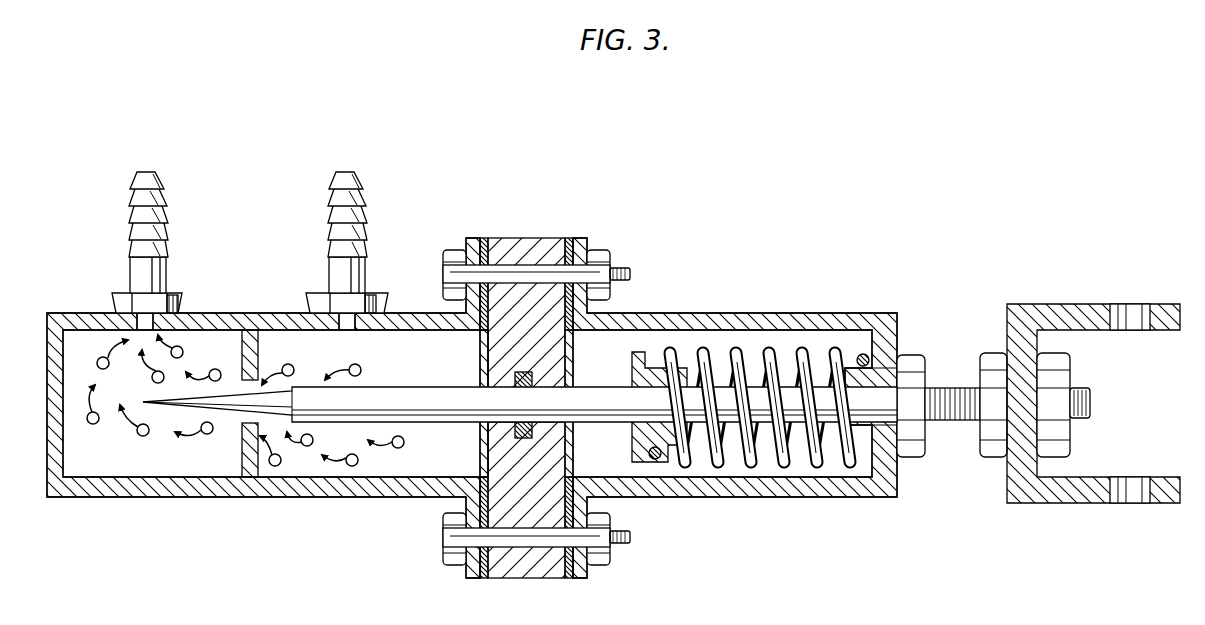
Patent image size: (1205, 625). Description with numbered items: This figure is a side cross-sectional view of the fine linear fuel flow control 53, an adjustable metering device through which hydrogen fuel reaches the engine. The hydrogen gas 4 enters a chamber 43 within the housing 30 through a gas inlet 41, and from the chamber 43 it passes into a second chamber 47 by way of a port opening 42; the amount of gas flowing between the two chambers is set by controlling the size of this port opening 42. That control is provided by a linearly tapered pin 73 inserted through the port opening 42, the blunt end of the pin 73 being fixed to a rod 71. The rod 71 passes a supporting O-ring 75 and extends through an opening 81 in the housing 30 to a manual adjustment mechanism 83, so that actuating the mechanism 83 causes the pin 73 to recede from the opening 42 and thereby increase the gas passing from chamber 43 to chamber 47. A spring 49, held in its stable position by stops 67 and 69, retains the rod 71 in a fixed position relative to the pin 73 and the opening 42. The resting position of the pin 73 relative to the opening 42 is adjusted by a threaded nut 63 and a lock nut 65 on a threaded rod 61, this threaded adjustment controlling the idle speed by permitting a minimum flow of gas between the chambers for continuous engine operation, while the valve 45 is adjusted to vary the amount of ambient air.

The hydrogen gas 4 is at (348, 462).
The housing 30 is at (805, 488).
The gas inlet 41 is at (365, 205).
The port opening 42 is at (243, 417).
The chamber 43 is at (412, 340).
The valve 45 is at (165, 193).
The chamber 47 is at (103, 355).
The spring 49 is at (685, 352).
The fine linear fuel flow control 53 is at (535, 240).
The threaded rod 61 is at (948, 388).
The threaded nut 63 is at (993, 460).
The lock nut 65 is at (1062, 440).
The stop 67 is at (658, 460).
The stop 69 is at (855, 468).
The rod 71 is at (593, 400).
The linearly tapered pin 73 is at (228, 392).
The O-ring 75 is at (515, 433).
The opening 81 is at (888, 470).
The manual adjustment mechanism 83 is at (1050, 503).